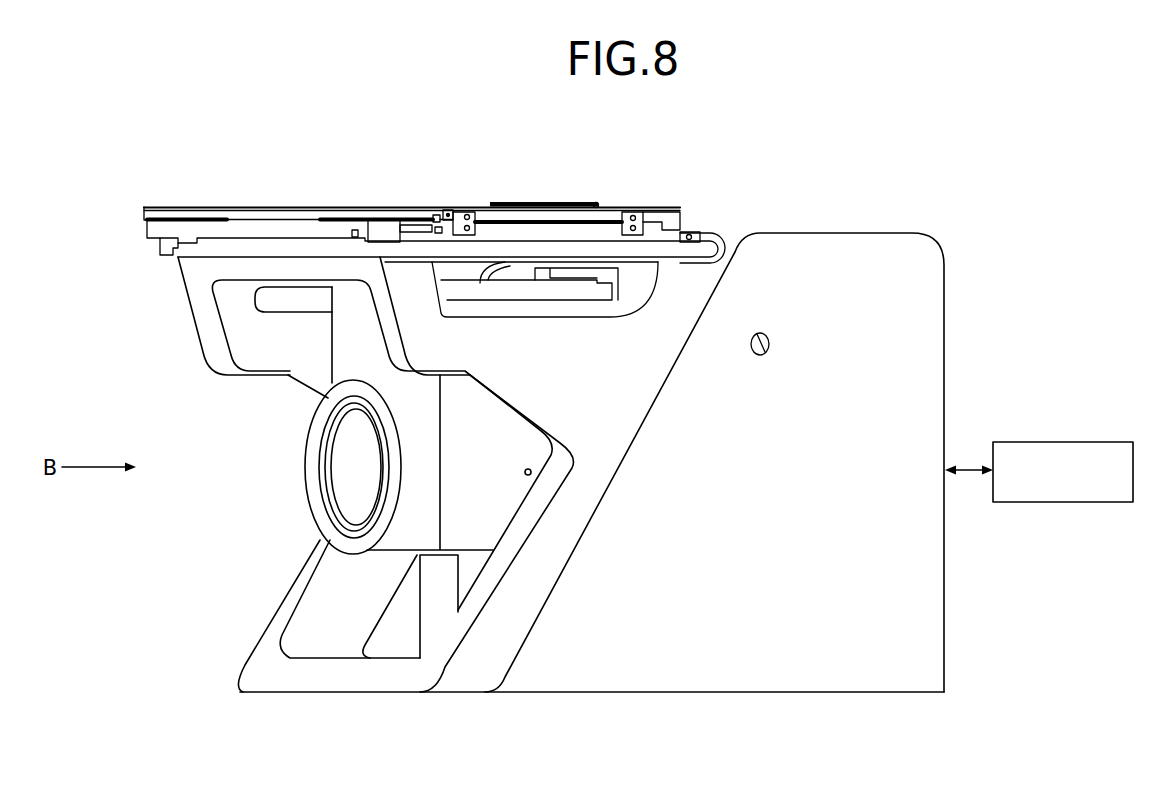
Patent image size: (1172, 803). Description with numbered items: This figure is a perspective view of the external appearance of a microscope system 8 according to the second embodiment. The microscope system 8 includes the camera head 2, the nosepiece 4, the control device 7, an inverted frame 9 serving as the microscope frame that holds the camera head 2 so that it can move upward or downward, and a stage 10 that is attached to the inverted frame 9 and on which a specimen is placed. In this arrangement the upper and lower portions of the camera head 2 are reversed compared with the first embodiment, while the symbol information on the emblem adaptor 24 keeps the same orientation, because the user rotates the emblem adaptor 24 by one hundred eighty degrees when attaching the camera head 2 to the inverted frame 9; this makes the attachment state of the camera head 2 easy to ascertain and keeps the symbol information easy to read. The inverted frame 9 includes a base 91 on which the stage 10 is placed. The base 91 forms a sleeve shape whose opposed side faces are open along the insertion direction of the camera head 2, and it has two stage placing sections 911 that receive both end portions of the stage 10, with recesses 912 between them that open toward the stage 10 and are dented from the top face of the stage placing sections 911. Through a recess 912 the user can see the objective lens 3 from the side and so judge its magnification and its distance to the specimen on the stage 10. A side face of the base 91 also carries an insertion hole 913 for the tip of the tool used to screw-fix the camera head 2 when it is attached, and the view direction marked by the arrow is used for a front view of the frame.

The camera head 2 is at (403, 523).
The objective lens 3 is at (437, 268).
The nosepiece 4 is at (482, 290).
The control device 7 is at (1080, 440).
The microscope system 8 is at (835, 147).
The inverted frame 9 is at (941, 250).
The stage 10 is at (327, 210).
The emblem adaptor 24 is at (306, 482).
The base 91 is at (768, 683).
The stage placing section 911 is at (250, 272).
The recess 912 is at (648, 280).
The insertion hole 913 is at (768, 347).